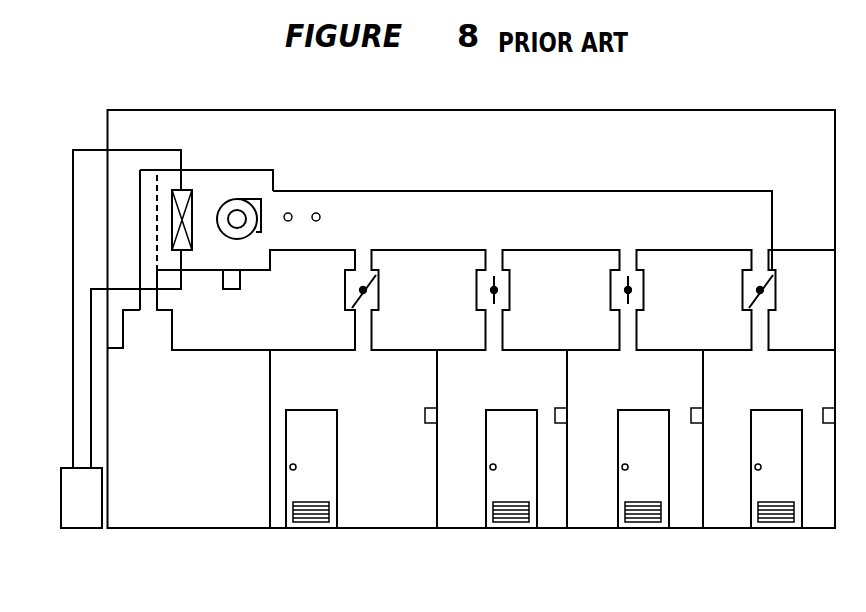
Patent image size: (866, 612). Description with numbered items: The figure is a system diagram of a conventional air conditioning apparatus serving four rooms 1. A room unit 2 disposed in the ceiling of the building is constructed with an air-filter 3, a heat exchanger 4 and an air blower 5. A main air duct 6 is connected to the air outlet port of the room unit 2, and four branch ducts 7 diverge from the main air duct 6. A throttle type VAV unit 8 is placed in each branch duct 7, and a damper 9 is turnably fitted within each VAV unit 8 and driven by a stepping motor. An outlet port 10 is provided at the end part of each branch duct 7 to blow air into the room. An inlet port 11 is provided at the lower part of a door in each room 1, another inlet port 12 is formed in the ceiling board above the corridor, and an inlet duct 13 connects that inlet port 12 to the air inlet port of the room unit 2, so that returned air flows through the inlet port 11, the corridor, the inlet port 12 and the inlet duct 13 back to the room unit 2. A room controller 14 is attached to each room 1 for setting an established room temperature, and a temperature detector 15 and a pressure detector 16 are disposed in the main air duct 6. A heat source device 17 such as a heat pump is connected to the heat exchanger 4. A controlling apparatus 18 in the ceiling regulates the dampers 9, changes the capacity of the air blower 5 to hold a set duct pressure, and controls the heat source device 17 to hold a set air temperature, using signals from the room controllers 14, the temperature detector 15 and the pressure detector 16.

The room 1 is at (387, 512).
The room unit 2 is at (207, 170).
The air-filter 3 is at (155, 203).
The heat exchanger 4 is at (182, 192).
The air blower 5 is at (234, 198).
The main air duct 6 is at (442, 191).
The branch duct 7 is at (373, 335).
The throttle type VAV unit 8 is at (380, 287).
The damper 9 is at (363, 286).
The outlet port 10 is at (363, 345).
The inlet port 11 is at (306, 521).
The inlet port 12 is at (143, 343).
The inlet duct 13 is at (140, 240).
The room controller 14 is at (425, 413).
The temperature detector 15 is at (288, 213).
The pressure detector 16 is at (316, 213).
The heat source device 17 is at (83, 529).
The controlling apparatus 18 is at (231, 290).